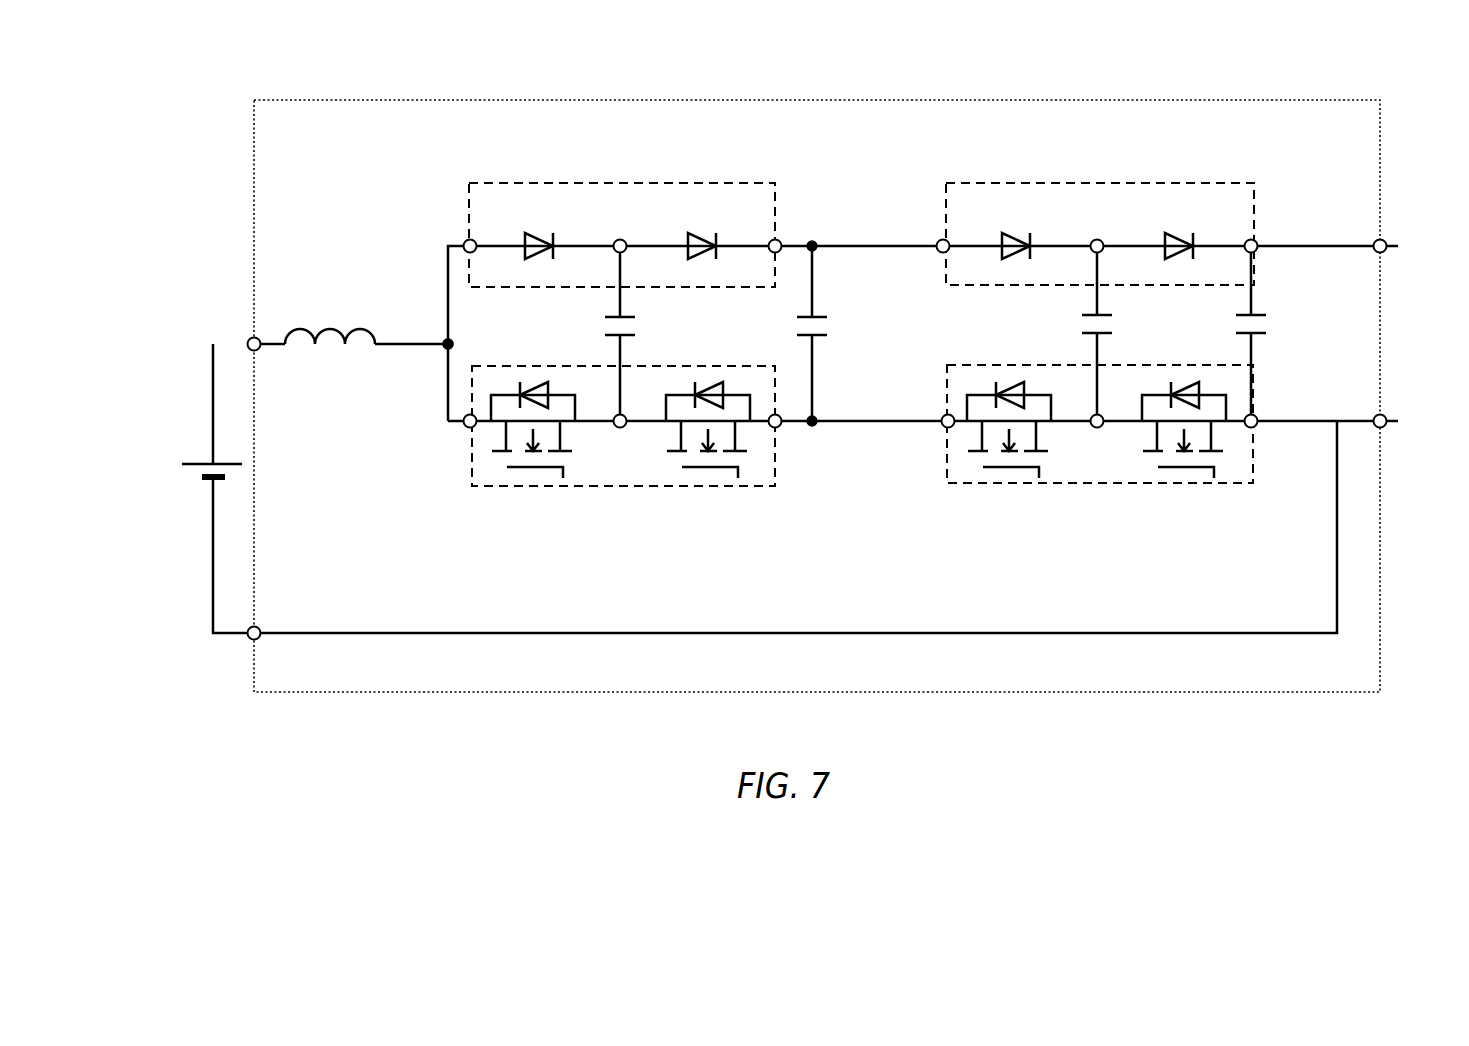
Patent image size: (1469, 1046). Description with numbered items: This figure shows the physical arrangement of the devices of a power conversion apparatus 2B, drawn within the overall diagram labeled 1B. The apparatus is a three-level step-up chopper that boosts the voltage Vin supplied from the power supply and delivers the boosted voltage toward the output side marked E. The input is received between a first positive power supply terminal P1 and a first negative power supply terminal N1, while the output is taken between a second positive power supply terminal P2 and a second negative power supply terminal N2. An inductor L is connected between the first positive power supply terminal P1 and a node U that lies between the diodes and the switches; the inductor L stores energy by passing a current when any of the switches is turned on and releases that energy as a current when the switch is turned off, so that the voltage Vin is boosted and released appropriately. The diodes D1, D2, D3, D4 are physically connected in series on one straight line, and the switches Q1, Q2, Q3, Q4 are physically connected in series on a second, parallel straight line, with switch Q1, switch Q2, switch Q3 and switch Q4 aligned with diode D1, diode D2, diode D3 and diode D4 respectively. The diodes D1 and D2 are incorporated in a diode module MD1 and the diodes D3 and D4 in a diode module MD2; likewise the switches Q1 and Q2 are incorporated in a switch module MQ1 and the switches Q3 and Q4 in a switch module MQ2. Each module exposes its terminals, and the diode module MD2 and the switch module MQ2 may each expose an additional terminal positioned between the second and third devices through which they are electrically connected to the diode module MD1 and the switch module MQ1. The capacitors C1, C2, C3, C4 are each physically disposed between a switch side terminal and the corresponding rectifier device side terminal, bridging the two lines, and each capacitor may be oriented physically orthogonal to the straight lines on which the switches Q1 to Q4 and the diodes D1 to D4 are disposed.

The power conversion device 1B is at (342, 37).
The power conversion apparatus 2B is at (888, 100).
The inductor L is at (302, 312).
The node U is at (435, 327).
The first positive power supply terminal P1 is at (230, 326).
The first negative power supply terminal N1 is at (233, 656).
The second positive power supply terminal P2 is at (1408, 226).
The second negative power supply terminal N2 is at (1411, 440).
The voltage Vin is at (172, 452).
The output voltage E is at (1434, 320).
The diode D1 is at (536, 232).
The diode D2 is at (699, 232).
The diode D3 is at (1013, 232).
The diode D4 is at (1176, 232).
The capacitor C1 is at (638, 328).
The capacitor C2 is at (798, 316).
The capacitor C3 is at (1115, 328).
The capacitor C4 is at (1268, 316).
The switch Q1 is at (545, 486).
The switch Q2 is at (720, 486).
The switch Q3 is at (1021, 486).
The switch Q4 is at (1196, 486).
The diode module MD1 is at (755, 182).
The diode module MD2 is at (1246, 183).
The switch module MQ1 is at (763, 490).
The switch module MQ2 is at (1243, 497).